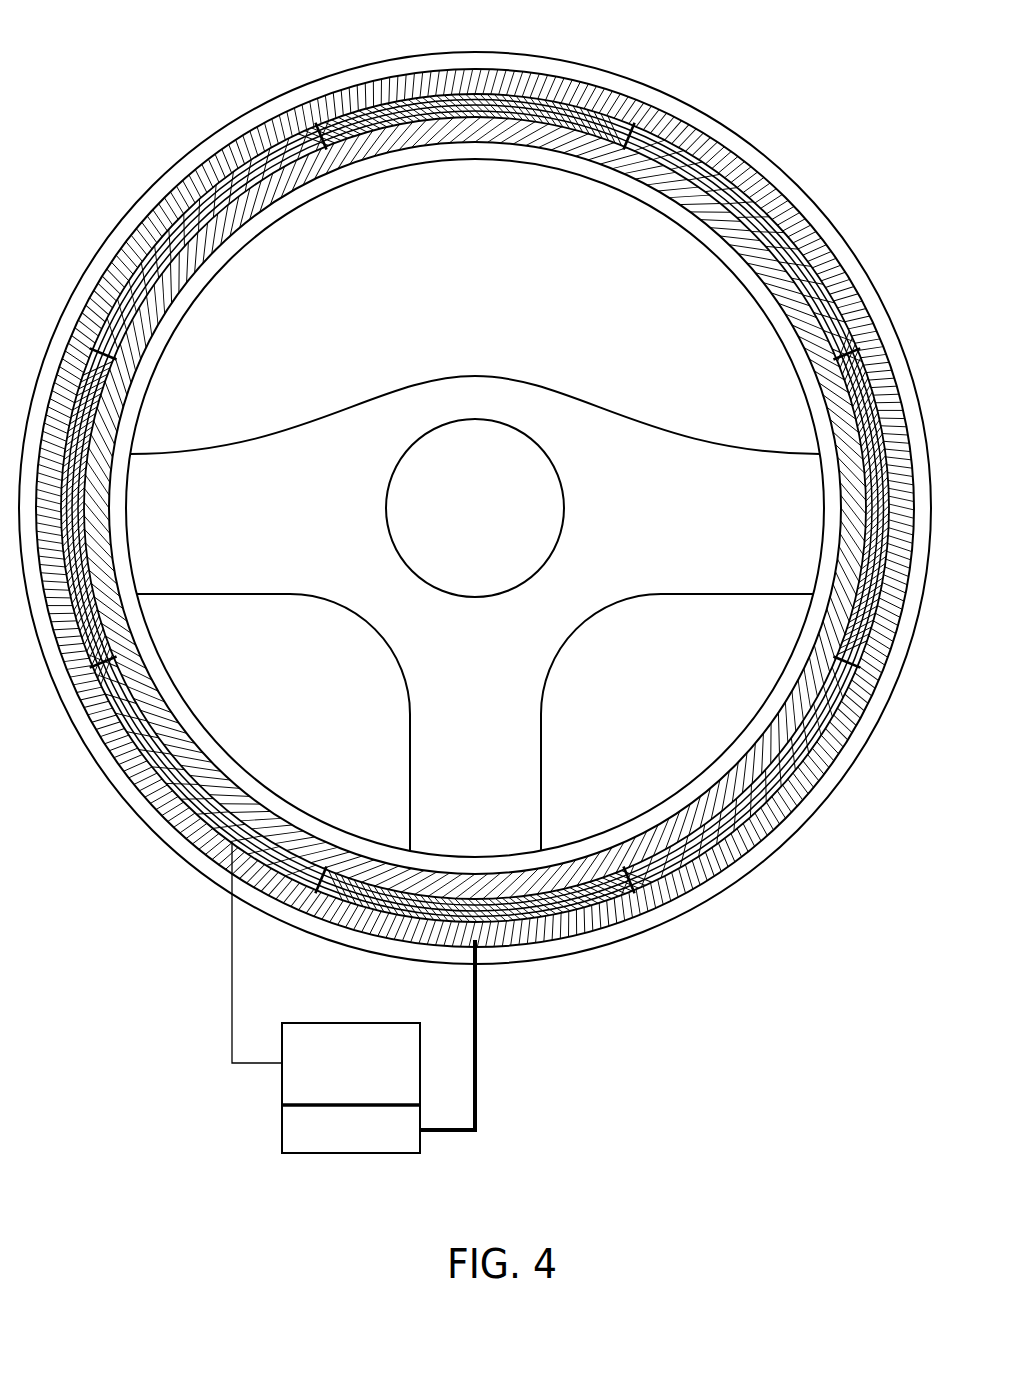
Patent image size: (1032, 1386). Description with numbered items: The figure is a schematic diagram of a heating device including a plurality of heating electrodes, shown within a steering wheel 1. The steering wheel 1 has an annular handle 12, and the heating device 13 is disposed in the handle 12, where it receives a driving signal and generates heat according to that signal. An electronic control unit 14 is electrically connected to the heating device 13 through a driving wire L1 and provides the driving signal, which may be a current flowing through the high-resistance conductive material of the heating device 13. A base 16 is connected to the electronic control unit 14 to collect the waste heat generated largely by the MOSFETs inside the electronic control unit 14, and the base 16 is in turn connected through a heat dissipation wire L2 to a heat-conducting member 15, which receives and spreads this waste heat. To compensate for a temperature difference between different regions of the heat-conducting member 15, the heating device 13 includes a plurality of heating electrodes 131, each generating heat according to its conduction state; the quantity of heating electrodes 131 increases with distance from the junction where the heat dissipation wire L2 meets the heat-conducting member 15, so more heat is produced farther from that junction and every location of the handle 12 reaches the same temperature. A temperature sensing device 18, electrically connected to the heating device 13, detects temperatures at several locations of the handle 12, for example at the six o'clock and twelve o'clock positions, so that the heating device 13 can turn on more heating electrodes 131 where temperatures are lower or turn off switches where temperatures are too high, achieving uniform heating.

The steering wheel 1 is at (103, 18).
The handle 12 is at (232, 108).
The heating device 13 is at (103, 312).
The heating electrodes 131 is at (507, 110).
The electronic control unit 14 is at (350, 1022).
The heat-conducting member 15 is at (167, 200).
The base 16 is at (350, 1155).
The temperature sensing device 18 is at (112, 318).
The driving wire L1 is at (232, 945).
The heat dissipation wire L2 is at (478, 1013).